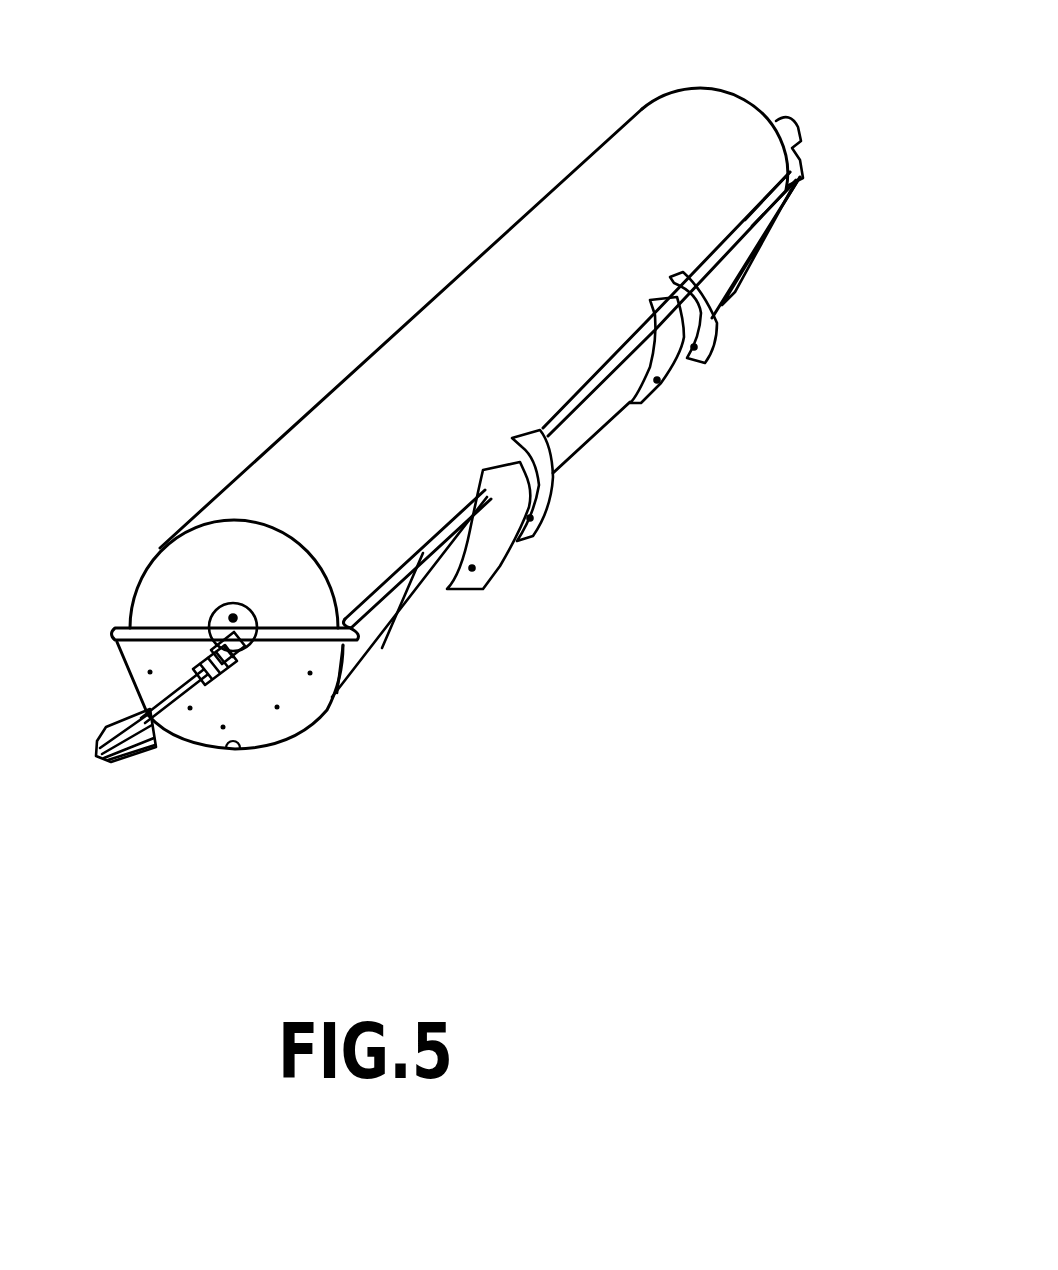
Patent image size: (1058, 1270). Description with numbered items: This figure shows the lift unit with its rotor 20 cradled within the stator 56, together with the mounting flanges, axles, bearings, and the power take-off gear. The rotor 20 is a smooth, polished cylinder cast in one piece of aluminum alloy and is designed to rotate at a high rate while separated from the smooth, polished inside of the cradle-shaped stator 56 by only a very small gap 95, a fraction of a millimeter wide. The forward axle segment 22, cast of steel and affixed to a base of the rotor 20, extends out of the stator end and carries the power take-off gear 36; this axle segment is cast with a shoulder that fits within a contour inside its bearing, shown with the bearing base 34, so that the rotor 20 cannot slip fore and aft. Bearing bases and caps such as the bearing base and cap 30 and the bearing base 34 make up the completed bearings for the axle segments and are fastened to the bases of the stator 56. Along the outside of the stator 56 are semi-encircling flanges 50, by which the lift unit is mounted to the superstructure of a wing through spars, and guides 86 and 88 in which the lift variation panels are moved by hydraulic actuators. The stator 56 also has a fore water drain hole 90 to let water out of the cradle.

The cylindrical rotor 20 is at (432, 323).
The forward axle segment 22 is at (163, 690).
The bearing base and cap 30 is at (778, 120).
The bearing base 34 is at (233, 677).
The power take-off gear 36 is at (133, 760).
The semi-encircling flanges 50 is at (555, 520).
The stator 56 is at (388, 653).
The guide 86 is at (790, 206).
The guide 88 is at (397, 583).
The fore water drain hole 90 is at (231, 750).
The gap 95 is at (586, 380).